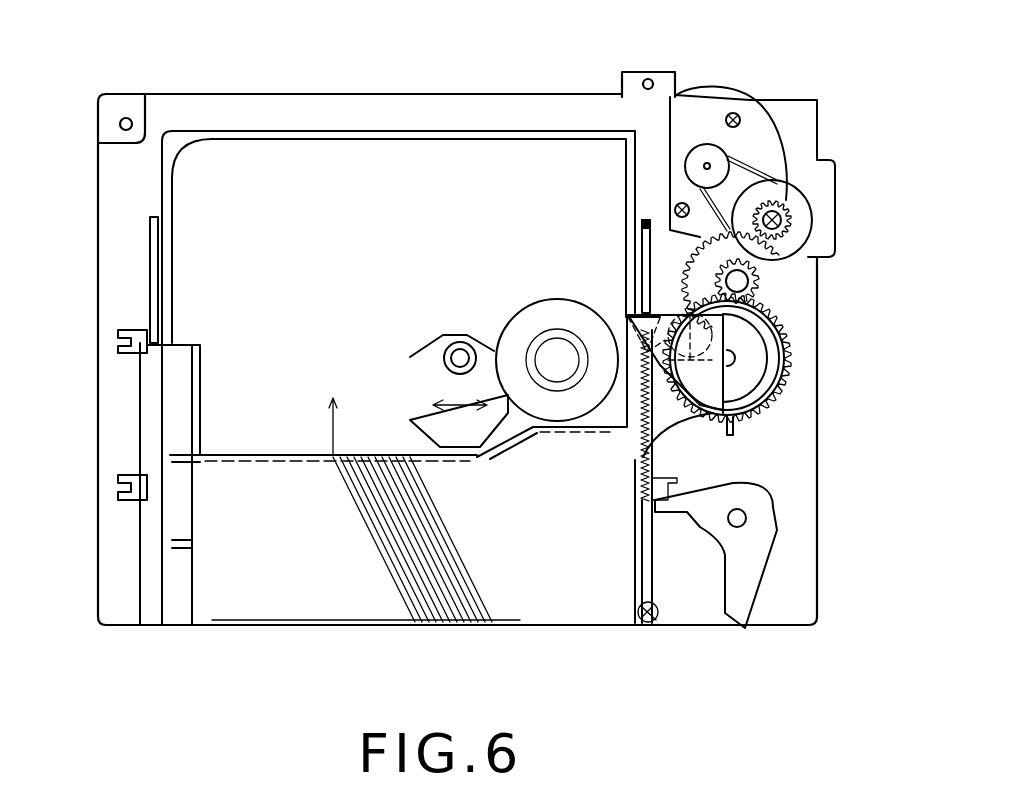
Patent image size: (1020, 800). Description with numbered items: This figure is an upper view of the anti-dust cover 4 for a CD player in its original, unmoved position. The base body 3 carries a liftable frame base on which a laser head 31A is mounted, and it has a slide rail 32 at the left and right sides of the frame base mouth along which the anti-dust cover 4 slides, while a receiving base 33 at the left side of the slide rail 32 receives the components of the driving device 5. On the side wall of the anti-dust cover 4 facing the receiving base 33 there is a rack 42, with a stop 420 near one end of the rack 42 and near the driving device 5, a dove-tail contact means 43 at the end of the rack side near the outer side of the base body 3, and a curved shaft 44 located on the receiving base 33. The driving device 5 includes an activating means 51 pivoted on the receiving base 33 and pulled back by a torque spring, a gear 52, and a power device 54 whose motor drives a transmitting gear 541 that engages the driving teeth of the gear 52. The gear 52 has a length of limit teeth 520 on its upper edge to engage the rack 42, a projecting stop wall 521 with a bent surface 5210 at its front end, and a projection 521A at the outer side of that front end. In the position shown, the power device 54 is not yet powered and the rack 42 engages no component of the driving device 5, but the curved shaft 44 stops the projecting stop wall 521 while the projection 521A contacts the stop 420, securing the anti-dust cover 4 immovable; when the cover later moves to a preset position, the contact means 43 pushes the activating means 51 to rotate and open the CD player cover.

The base body 3 is at (124, 627).
The anti-dust cover 4 is at (276, 612).
The driving device 5 is at (799, 188).
The laser head 31A is at (455, 353).
The slide rail 32 is at (154, 236).
The receiving base 33 is at (777, 449).
The rack 42 is at (655, 470).
The dove-tail contact means 43 is at (656, 628).
The curved shaft 44 is at (745, 298).
The activating means 51 is at (753, 567).
The gear 52 is at (762, 360).
The power device 54 is at (707, 152).
The stop 420 is at (625, 335).
The limit teeth 520 is at (787, 388).
The projecting stop wall 521 is at (740, 325).
The projection 521A is at (630, 327).
The bent surface 5210 is at (740, 348).
The transmitting gear 541 is at (840, 252).